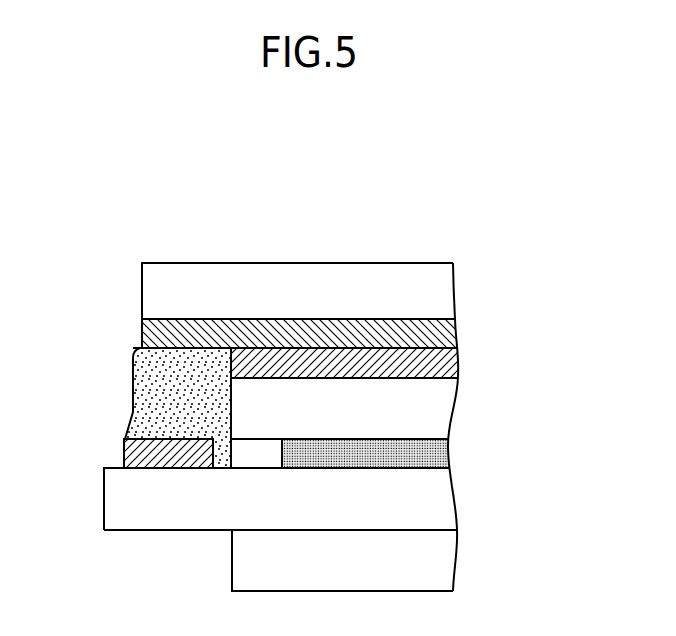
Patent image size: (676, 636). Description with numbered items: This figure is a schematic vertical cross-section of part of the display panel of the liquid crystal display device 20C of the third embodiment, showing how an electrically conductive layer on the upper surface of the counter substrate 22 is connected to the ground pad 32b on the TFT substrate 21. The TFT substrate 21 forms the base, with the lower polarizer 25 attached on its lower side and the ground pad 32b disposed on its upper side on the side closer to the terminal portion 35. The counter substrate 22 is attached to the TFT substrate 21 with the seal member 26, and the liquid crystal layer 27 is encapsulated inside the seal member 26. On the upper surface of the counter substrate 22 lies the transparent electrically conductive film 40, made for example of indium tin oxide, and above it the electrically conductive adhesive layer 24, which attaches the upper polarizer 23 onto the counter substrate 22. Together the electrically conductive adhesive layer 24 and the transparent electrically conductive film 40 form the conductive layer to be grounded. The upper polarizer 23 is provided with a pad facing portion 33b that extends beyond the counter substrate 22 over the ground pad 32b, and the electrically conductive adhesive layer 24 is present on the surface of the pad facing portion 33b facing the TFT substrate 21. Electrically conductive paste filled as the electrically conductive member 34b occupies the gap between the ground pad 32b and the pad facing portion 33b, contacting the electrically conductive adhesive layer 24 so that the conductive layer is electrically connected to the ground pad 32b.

The liquid crystal display device 20C is at (394, 243).
The TFT substrate 21 is at (438, 497).
The counter substrate 22 is at (438, 413).
The upper polarizer 23 is at (438, 290).
The electrically conductive adhesive layer 24 is at (441, 333).
The lower polarizer 25 is at (438, 565).
The seal member 26 is at (257, 453).
The liquid crystal layer 27 is at (442, 455).
The ground pad 32b is at (125, 453).
The pad facing portion 33b is at (236, 240).
The electrically conductive member 34b is at (145, 403).
The terminal portion 35 is at (226, 537).
The transparent electrically conductive film 40 is at (446, 365).